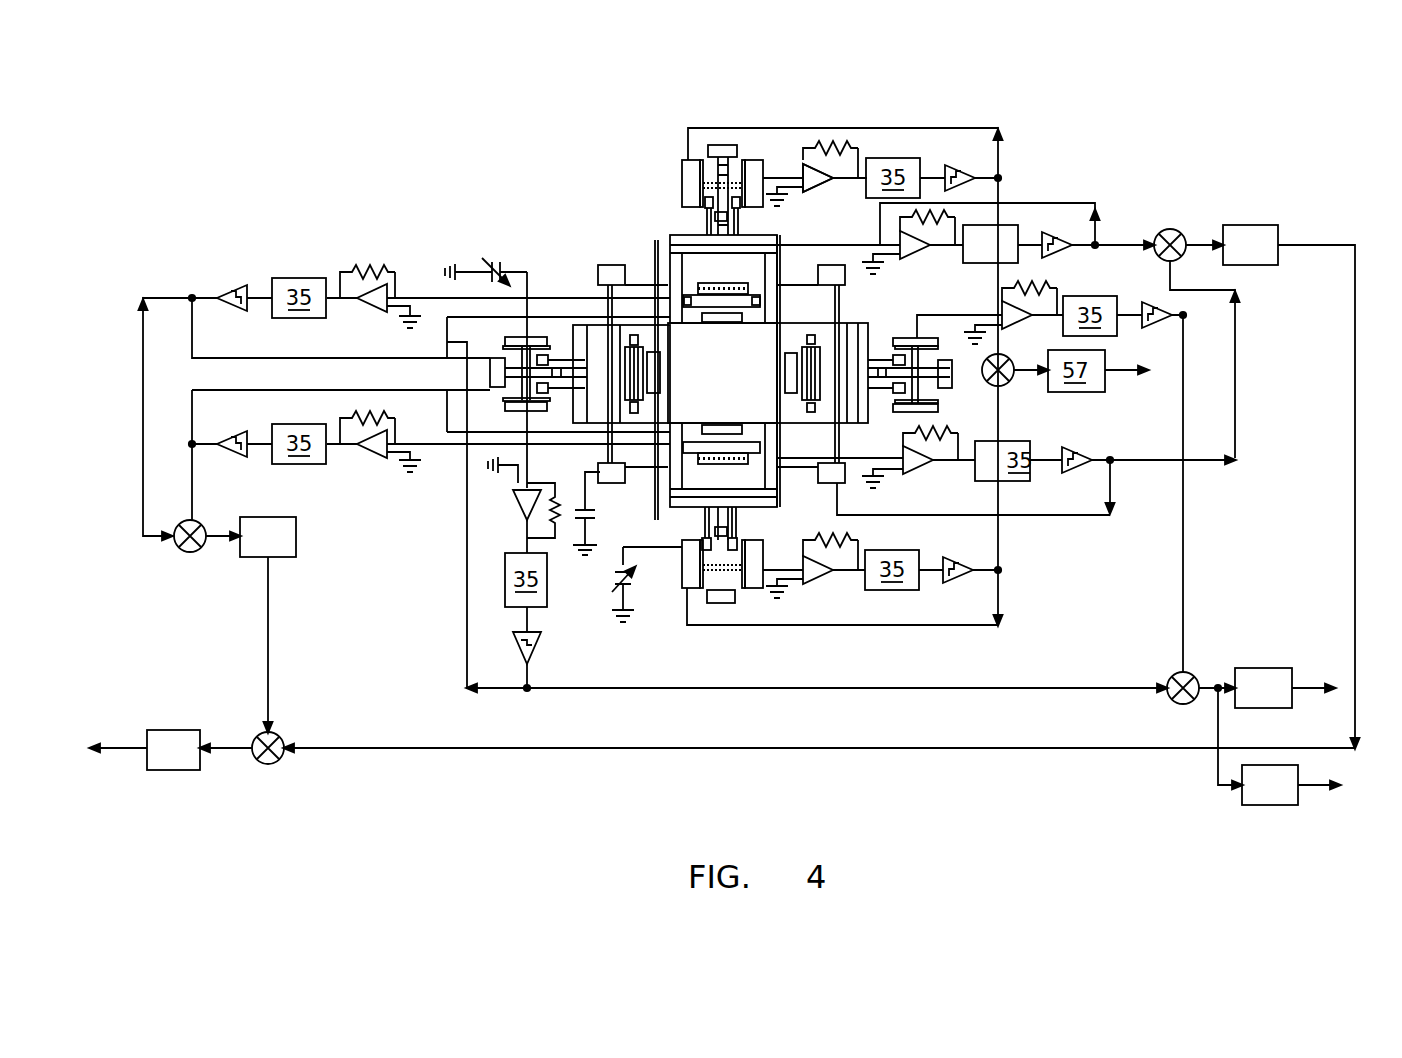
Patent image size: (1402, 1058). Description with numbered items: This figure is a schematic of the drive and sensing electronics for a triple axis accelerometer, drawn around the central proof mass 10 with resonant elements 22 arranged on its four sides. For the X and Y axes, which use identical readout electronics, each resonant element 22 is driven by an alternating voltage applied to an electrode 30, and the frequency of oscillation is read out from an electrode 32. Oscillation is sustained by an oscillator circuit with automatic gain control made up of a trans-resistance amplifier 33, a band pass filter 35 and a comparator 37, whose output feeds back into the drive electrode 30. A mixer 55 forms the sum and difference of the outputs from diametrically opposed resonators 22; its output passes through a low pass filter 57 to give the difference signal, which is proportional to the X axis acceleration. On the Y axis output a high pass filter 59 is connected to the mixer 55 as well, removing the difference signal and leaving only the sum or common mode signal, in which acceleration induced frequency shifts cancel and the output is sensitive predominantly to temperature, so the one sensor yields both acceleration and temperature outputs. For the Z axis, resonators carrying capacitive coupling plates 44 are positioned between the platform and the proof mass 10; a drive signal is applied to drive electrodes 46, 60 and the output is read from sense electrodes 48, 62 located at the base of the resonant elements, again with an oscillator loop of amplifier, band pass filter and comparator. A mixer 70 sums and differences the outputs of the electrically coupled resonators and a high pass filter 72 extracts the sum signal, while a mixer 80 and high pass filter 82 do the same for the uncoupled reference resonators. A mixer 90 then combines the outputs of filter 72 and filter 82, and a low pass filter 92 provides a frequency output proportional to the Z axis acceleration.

The proof mass 10 is at (733, 383).
The resonant element 22 is at (713, 158).
The drive electrode 30 is at (682, 172).
The readout electrode 32 is at (758, 162).
The trans-resistance amplifier 33 is at (825, 185).
The band pass filter 35 is at (1008, 225).
The comparator 37 is at (1055, 240).
The capacitive coupling plate 44 is at (630, 352).
The drive electrode 46 is at (722, 323).
The sense electrode 48 is at (690, 292).
The mixer 55 is at (1172, 677).
The low pass filter 57 is at (1274, 700).
The high pass filter 59 is at (1281, 797).
The drive electrode 60 is at (790, 385).
The sense electrode 62 is at (650, 352).
The mixer 70 is at (190, 553).
The high pass filter 72 is at (279, 549).
The mixer 80 is at (1178, 232).
The high pass filter 82 is at (1262, 257).
The mixer 90 is at (275, 765).
The low pass filter 92 is at (185, 762).